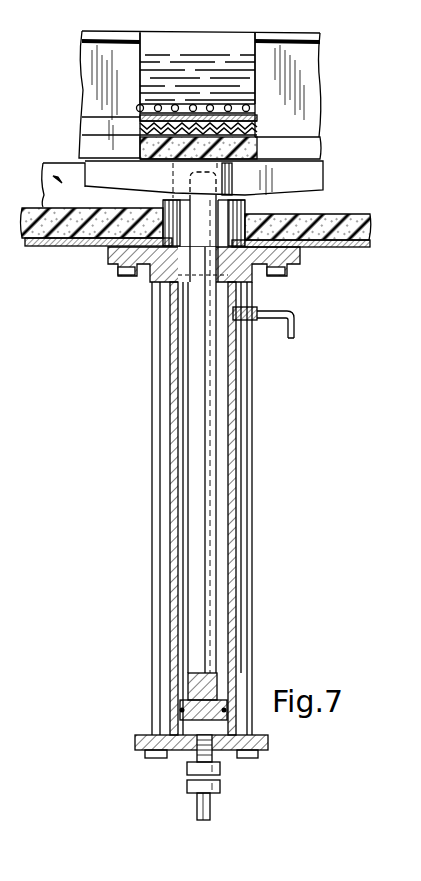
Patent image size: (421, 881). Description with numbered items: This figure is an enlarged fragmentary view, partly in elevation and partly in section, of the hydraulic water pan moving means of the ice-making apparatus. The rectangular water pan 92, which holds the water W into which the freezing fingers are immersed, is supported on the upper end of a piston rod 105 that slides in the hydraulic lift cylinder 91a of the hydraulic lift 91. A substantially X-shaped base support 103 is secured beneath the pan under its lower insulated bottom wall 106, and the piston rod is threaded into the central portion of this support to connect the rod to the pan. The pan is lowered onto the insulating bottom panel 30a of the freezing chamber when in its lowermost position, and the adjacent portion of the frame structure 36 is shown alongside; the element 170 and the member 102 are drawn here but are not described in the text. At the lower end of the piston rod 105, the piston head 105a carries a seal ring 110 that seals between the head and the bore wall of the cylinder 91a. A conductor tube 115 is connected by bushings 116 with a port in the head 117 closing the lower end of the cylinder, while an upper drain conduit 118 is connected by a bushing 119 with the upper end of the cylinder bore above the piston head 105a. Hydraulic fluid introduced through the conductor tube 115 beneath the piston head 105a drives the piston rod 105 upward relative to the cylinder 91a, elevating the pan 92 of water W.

The ball bearing row 170 is at (137, 107).
The water pan 92 is at (117, 117).
The frame bracket 36 is at (45, 166).
The water W is at (250, 88).
The insulated bottom wall 106 is at (257, 128).
The base ring 102 is at (307, 152).
The base support 103 is at (307, 179).
The bottom panel of insulation 30a is at (347, 220).
The bushing 119 is at (257, 310).
The upper drain conduit 118 is at (294, 324).
The hydraulic lift cylinder 91a is at (237, 448).
The piston rod 105 is at (208, 487).
The hydraulic lift 91 is at (240, 508).
The piston head 105a is at (223, 708).
The seal ring 110 is at (221, 712).
The head 117 is at (268, 742).
The bushings 116 is at (220, 768).
The conductor tube 115 is at (212, 808).